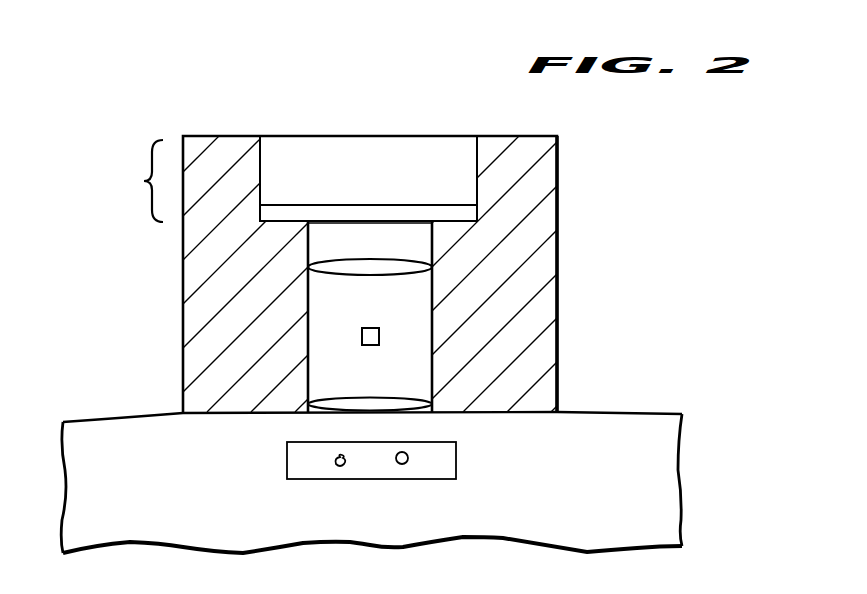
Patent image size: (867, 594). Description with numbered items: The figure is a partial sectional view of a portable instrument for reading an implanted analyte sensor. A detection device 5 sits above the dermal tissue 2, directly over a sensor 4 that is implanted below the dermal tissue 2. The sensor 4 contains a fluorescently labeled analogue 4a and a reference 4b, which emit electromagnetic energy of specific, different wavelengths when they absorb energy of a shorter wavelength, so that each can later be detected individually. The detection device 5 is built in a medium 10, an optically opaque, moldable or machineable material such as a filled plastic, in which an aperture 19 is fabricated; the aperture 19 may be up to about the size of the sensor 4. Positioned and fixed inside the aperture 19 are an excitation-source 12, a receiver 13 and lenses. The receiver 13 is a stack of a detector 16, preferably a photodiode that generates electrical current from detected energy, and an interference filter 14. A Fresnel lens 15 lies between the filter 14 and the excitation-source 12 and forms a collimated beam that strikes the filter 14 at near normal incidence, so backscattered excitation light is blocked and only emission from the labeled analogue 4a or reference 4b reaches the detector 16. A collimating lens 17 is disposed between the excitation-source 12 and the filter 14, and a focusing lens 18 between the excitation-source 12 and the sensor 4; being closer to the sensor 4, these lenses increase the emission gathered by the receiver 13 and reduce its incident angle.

The dermal tissue 2 is at (176, 491).
The sensor 4 is at (456, 456).
The labeled analogue 4a is at (340, 468).
The reference 4b is at (402, 464).
The detection device 5 is at (622, 232).
The medium 10 is at (550, 347).
The excitation-source 12 is at (361, 342).
The receiver 13 is at (292, 179).
The filter 14 is at (337, 209).
The Fresnel lens 15 is at (410, 222).
The detector 16 is at (374, 145).
The collimating lens 17 is at (397, 277).
The focusing lens 18 is at (399, 397).
The aperture 19 is at (352, 318).